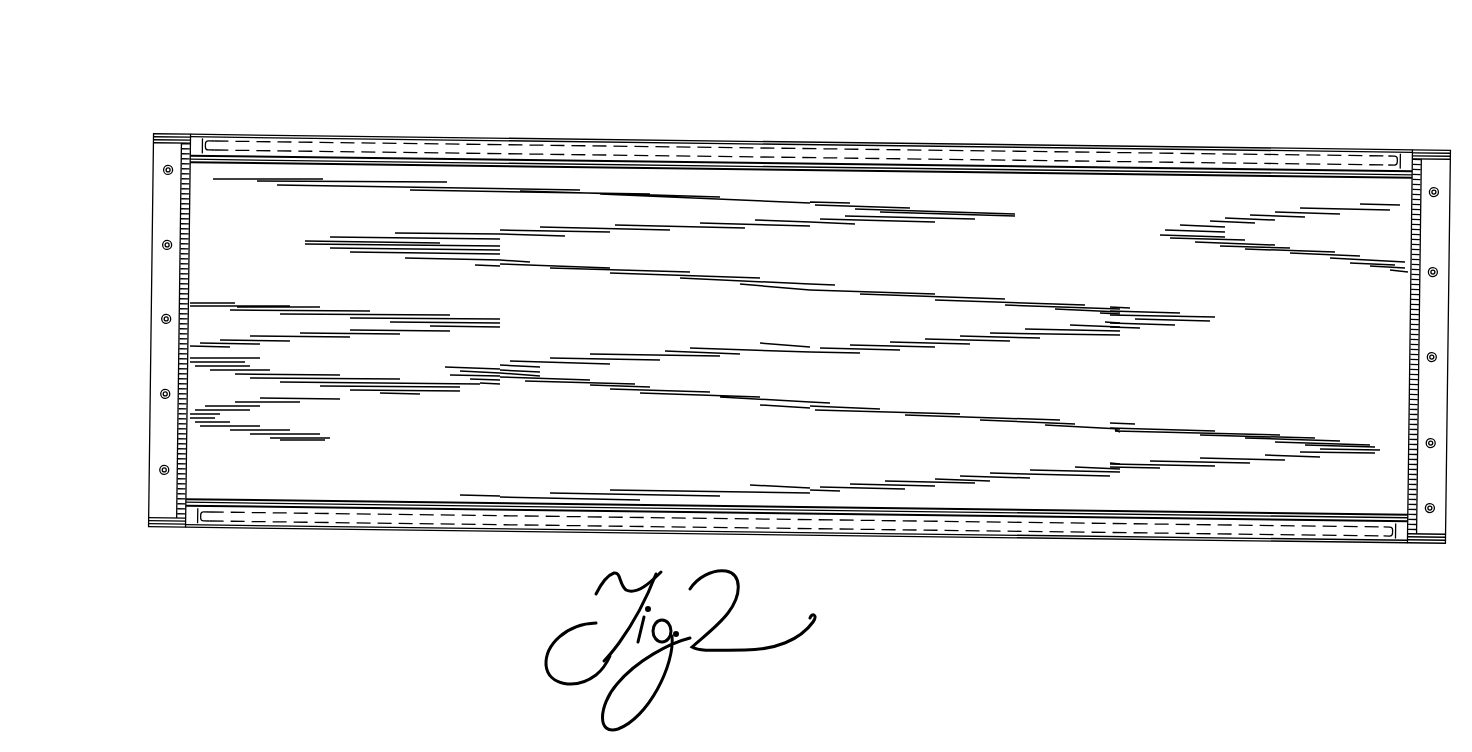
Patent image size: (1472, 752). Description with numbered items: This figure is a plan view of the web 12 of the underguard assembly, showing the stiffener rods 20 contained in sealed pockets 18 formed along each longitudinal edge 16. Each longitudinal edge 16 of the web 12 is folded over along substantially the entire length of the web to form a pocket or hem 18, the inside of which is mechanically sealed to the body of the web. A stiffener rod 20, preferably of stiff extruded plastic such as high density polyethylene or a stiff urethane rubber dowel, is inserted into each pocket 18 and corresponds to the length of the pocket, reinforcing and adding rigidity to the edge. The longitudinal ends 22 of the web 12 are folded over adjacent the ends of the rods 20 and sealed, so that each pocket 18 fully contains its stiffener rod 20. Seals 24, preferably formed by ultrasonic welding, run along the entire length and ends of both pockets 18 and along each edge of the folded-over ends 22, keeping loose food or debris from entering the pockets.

The web 12 is at (323, 198).
The longitudinal edge 16 is at (774, 120).
The pocket 18 is at (932, 145).
The stiffener rod 20 is at (1152, 157).
The longitudinal end 22 is at (146, 138).
The seal 24 is at (183, 540).